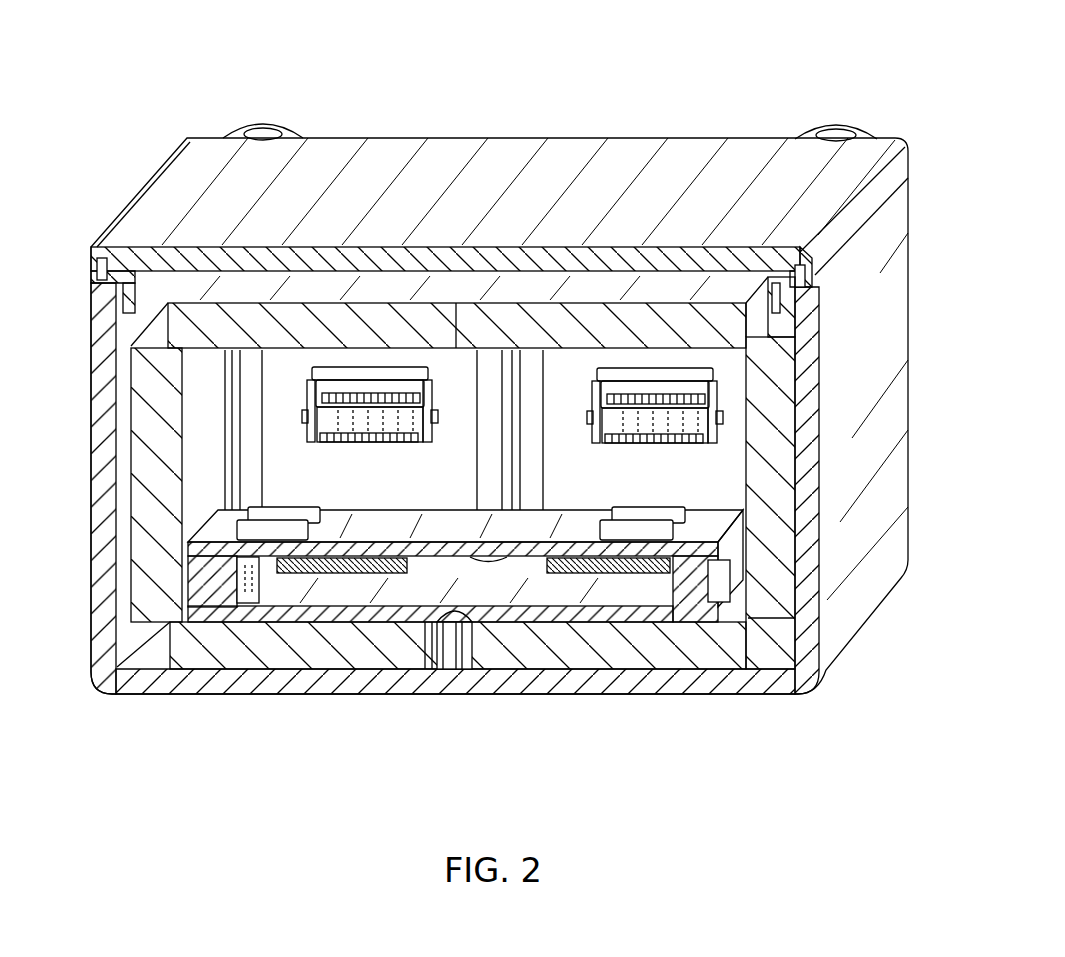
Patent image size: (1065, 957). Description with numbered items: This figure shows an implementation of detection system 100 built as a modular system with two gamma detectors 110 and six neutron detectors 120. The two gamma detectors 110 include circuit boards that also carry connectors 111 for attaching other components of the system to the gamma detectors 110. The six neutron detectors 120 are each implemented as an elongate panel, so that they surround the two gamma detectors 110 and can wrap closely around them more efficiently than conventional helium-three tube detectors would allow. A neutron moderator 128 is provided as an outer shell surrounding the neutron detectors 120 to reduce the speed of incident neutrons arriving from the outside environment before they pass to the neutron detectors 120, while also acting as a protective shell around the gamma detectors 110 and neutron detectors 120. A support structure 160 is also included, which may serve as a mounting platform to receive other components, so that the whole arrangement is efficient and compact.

The detection system 100 is at (163, 52).
The gamma detector 110 is at (408, 488).
The connector 111 is at (316, 418).
The neutron detector 120 is at (407, 332).
The neutron moderator 128 is at (683, 155).
The support structure 160 is at (683, 600).